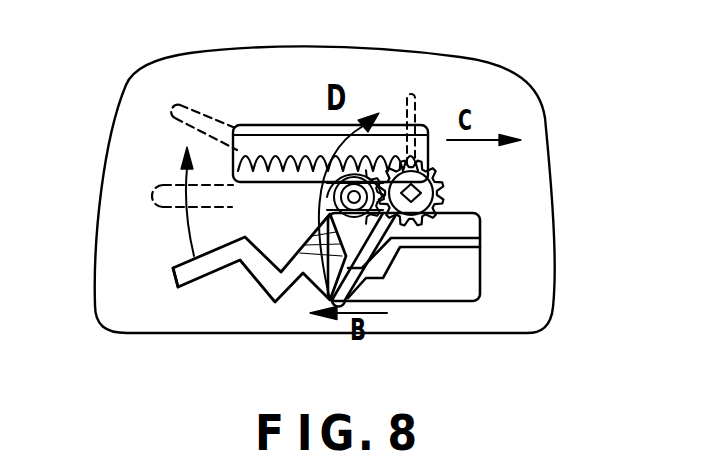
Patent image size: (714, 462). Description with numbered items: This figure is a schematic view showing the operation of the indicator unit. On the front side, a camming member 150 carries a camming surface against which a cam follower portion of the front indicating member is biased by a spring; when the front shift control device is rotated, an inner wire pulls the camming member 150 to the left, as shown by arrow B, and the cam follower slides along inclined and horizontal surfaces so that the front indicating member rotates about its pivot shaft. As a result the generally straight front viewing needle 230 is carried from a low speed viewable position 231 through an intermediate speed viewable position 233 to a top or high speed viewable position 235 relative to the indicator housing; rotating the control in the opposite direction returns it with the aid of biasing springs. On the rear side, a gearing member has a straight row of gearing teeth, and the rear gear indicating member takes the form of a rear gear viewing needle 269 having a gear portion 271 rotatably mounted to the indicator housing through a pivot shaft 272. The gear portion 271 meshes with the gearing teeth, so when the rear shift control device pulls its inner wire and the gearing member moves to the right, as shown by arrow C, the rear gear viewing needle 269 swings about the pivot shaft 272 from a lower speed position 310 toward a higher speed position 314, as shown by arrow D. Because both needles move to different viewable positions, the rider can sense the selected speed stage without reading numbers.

The camming member 150 is at (472, 262).
The front viewing needle 230 is at (197, 268).
The low speed viewable position 231 is at (172, 281).
The intermediate speed viewable position 233 is at (152, 197).
The high speed viewable position 235 is at (174, 108).
The rear gear viewing needle 269 is at (387, 257).
The gear portion 271 is at (431, 180).
The pivot shaft 272 is at (425, 193).
The lower speed position 310 is at (329, 298).
The higher speed position 314 is at (415, 92).